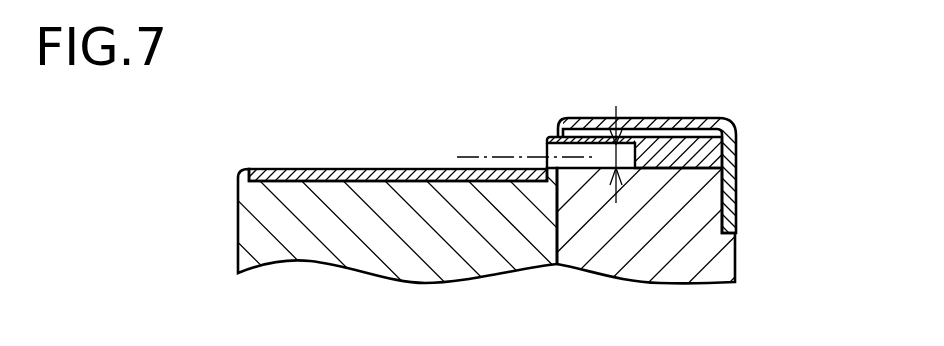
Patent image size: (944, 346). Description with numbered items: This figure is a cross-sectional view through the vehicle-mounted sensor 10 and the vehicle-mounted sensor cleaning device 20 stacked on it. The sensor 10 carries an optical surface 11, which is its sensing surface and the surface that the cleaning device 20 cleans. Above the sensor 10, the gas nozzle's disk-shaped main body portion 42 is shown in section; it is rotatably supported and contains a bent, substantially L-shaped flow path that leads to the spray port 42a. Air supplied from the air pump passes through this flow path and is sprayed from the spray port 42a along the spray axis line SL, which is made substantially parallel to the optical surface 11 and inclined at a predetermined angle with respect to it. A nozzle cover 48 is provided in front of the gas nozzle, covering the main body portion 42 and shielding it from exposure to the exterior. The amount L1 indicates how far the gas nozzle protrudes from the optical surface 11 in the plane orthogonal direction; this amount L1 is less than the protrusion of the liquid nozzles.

The vehicle-mounted sensor 10 is at (240, 222).
The optical surface 11 is at (286, 168).
The vehicle-mounted sensor cleaning device 20 is at (727, 270).
The main body portion 42 is at (714, 156).
The spray port 42a is at (544, 141).
The nozzle cover 48 is at (710, 119).
The spray axis line SL is at (504, 157).
The protrusion amount of gas nozzle L1 is at (633, 153).